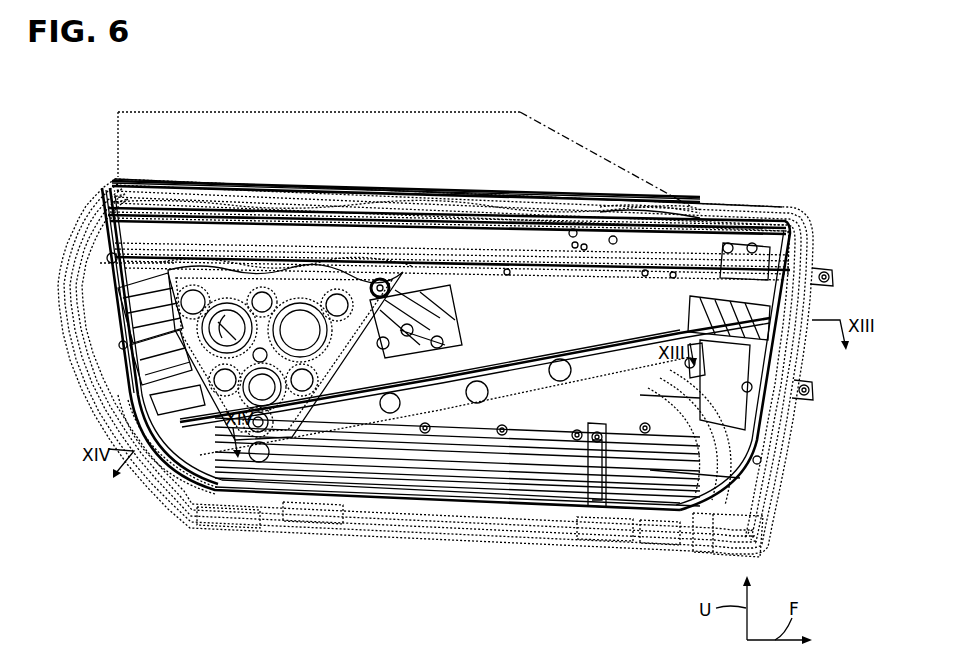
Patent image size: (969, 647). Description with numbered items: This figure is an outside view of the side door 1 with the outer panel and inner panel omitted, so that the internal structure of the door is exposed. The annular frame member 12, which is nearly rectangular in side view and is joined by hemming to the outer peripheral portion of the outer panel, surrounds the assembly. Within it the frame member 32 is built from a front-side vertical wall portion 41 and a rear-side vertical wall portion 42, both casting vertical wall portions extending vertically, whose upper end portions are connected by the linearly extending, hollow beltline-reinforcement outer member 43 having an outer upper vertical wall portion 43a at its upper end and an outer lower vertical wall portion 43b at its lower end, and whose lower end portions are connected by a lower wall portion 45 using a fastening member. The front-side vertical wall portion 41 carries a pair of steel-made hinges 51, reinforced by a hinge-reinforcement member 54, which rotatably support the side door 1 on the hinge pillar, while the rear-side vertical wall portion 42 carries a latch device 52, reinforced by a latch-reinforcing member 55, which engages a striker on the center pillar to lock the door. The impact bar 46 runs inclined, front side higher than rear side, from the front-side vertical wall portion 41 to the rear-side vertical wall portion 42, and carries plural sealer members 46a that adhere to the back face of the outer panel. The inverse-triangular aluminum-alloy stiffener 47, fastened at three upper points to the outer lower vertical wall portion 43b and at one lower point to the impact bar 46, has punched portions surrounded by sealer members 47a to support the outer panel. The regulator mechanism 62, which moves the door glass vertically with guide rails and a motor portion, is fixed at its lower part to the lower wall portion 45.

The side door 1 is at (84, 132).
The frame member 12 is at (428, 542).
The frame member 32 is at (586, 196).
The front-side vertical wall portion 41 is at (742, 456).
The rear-side vertical wall portion 42 is at (110, 273).
The beltline-reinforcement outer member 43 is at (702, 226).
The outer upper vertical wall portion 43a is at (633, 196).
The outer lower vertical wall portion 43b is at (538, 279).
The lower wall portion 45 is at (540, 450).
The impact bar 46 is at (597, 345).
The sealer members 46a is at (549, 371).
The stiffener 47 is at (280, 422).
The sealer members 47a is at (252, 456).
The hinges 51 is at (828, 273).
The latch device 52 is at (143, 334).
The hinge-reinforcement member 54 is at (752, 382).
The latch-reinforcing member 55 is at (160, 412).
The regulator mechanism 62 is at (441, 322).